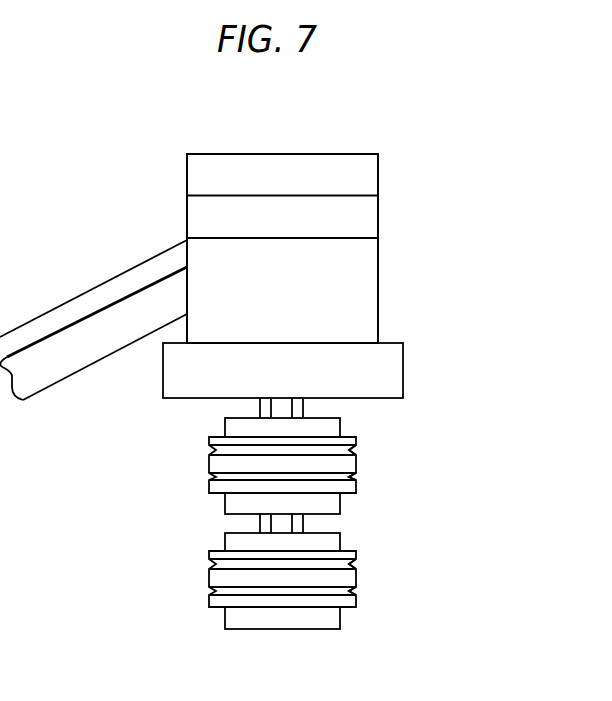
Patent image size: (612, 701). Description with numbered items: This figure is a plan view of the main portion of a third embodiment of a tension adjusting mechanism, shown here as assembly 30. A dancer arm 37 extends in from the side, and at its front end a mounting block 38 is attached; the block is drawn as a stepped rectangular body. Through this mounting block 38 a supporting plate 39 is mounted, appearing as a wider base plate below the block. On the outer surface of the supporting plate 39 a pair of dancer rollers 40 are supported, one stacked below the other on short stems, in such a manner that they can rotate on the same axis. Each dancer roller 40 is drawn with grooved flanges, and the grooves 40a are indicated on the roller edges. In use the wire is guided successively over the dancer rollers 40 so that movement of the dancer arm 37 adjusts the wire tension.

The spindle head assembly 30 is at (211, 155).
The dancer arm 37 is at (80, 296).
The mounting block 38 is at (378, 276).
The supporting plate 39 is at (403, 348).
The dancer roller 40 is at (207, 440).
The notch 40a is at (356, 452).